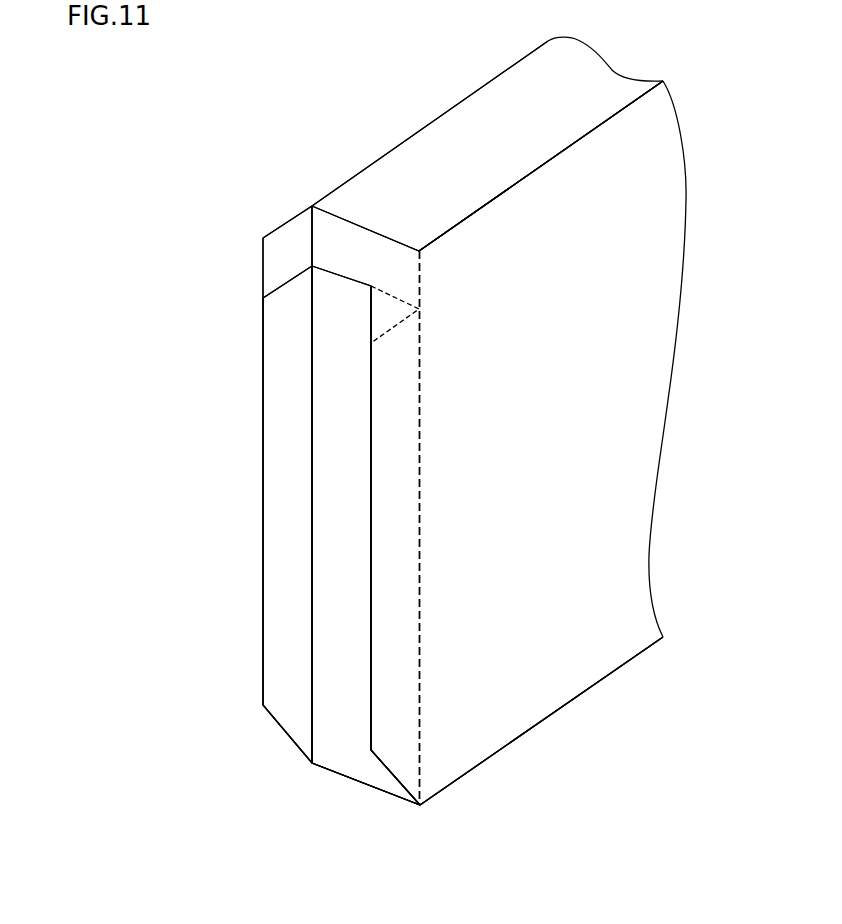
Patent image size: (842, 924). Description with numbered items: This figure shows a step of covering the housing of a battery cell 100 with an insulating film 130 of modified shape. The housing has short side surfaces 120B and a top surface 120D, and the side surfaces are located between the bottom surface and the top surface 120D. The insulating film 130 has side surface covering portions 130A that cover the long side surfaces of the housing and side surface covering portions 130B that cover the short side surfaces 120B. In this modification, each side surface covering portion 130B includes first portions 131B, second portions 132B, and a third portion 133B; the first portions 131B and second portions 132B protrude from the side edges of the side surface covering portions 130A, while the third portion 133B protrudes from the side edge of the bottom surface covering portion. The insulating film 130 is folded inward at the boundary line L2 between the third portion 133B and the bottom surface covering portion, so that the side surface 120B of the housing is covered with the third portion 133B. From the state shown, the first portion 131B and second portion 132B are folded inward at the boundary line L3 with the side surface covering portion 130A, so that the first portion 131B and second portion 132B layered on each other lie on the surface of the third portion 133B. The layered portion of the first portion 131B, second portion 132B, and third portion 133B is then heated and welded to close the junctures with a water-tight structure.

The battery cell 100 is at (315, 153).
The side surface 120B is at (347, 247).
The top surface 120D is at (450, 132).
The insulating film 130 is at (663, 268).
The side surface covering portion 130A is at (527, 454).
The side surface covering portion 130B is at (182, 507).
The first portion 131B is at (399, 550).
The second portion 132B is at (292, 498).
The third portion 133B is at (347, 617).
The boundary line L2 is at (352, 783).
The boundary line L3 is at (311, 420).